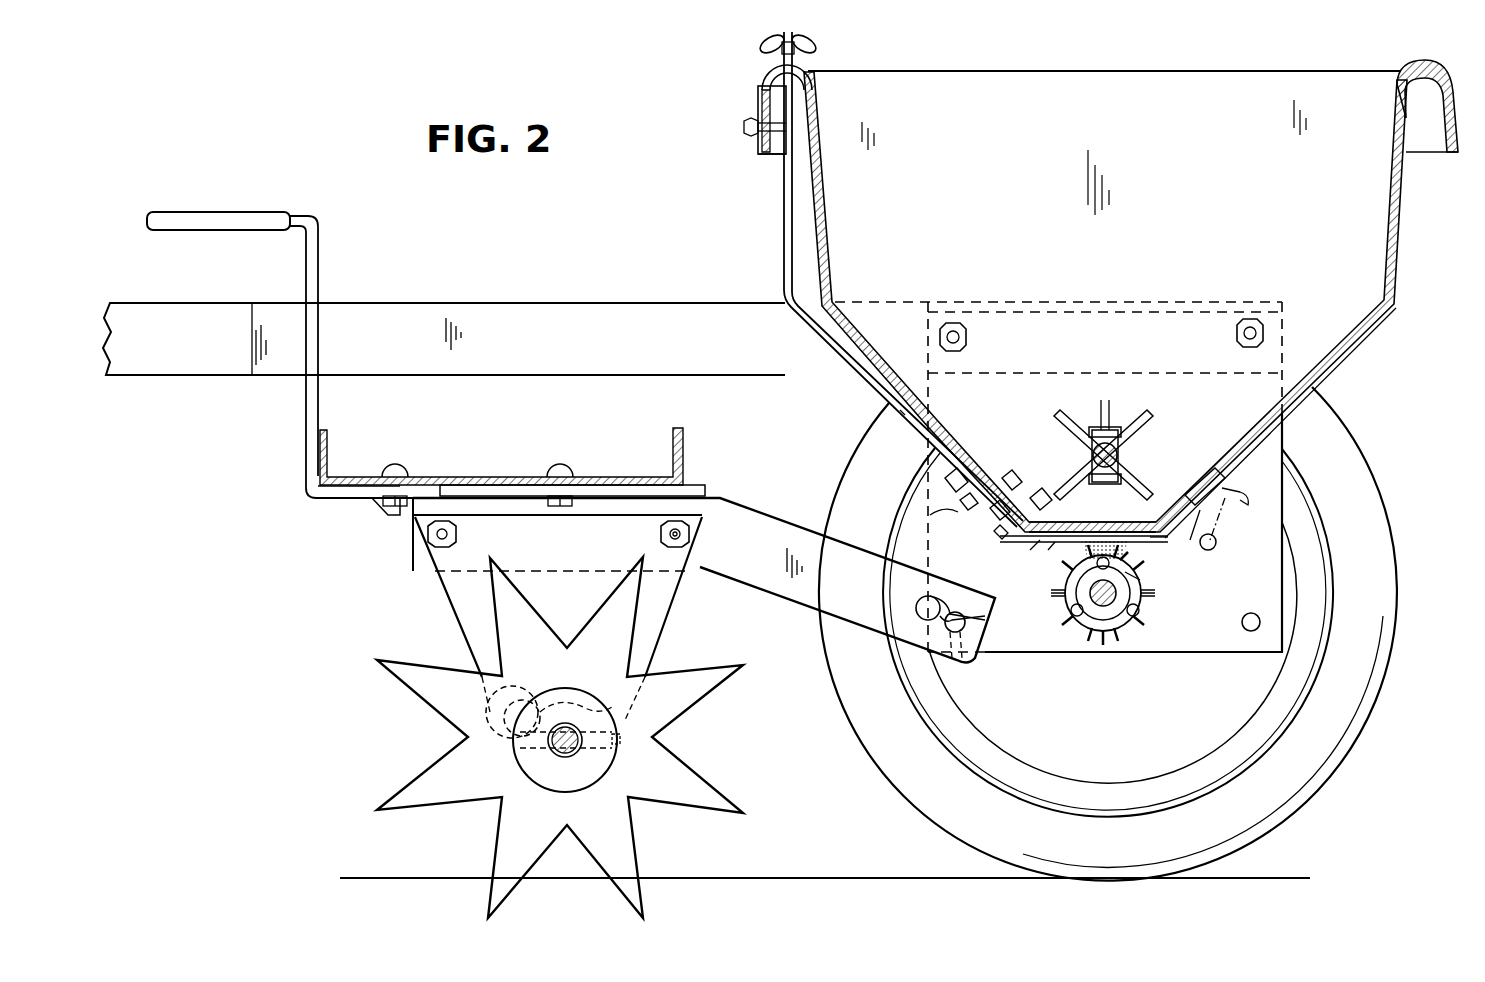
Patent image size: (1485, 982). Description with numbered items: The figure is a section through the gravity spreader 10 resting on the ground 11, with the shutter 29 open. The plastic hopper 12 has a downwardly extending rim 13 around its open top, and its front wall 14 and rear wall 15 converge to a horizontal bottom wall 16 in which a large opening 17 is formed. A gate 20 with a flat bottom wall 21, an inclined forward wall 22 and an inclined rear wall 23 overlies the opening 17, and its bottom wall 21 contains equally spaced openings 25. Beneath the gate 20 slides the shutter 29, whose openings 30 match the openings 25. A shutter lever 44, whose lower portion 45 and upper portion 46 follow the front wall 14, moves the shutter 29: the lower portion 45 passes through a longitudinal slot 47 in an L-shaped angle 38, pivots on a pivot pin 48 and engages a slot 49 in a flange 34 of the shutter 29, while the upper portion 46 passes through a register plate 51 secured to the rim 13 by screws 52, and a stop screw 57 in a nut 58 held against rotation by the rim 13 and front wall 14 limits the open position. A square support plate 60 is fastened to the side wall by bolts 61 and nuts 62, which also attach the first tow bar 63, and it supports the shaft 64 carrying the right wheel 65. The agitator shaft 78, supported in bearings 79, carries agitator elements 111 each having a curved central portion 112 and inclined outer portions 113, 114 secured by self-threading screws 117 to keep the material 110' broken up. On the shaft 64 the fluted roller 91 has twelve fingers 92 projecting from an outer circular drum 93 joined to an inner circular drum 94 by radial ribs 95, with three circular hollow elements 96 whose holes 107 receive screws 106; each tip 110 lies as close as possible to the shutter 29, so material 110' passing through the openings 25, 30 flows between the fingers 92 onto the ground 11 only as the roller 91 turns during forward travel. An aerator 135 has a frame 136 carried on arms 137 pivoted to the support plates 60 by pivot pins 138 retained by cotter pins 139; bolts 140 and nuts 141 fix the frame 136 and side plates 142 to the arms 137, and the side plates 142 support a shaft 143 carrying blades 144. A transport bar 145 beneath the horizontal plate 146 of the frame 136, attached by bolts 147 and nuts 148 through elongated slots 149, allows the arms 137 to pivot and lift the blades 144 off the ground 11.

The gravity spreader 10 is at (1087, 284).
The ground 11 is at (830, 878).
The hopper 12 is at (1442, 80).
The rim 13 is at (768, 158).
The front wall 14 is at (1084, 302).
The rear wall 15 is at (1340, 335).
The bottom wall 16 is at (1130, 541).
The opening 17 is at (1025, 490).
The gate 20 is at (1150, 519).
The bottom wall 21 is at (1060, 520).
The inclined forward wall 22 is at (1010, 472).
The inclined rear wall 23 is at (1180, 486).
The openings 25 is at (1090, 521).
The shutter 29 is at (1050, 544).
The openings 30 is at (1108, 524).
The flange 34 is at (1003, 543).
The L-shaped angle 38 is at (955, 519).
The shutter lever 44 is at (876, 413).
The lower portion 45 is at (862, 388).
The upper portion 46 is at (877, 279).
The longitudinal slot 47 is at (955, 485).
The pivot pin 48 is at (968, 512).
The slot 49 is at (1000, 524).
The register plate 51 is at (760, 102).
The screws 52 is at (743, 127).
The stop screw 57 is at (812, 58).
The nut 58 is at (808, 112).
The support plate 60 is at (928, 478).
The bolts 61 is at (1243, 333).
The nuts 62 is at (1243, 318).
The first tow bar 63 is at (545, 303).
The shaft 64 is at (1111, 620).
The right wheel 65 is at (848, 740).
The agitator shaft 78 is at (1120, 458).
The bearings 79 is at (1122, 438).
The fluted roller 91 is at (1115, 635).
The flutes or fingers 92 is at (1058, 615).
The outer circular drum 93 is at (1130, 635).
The inner circular drum 94 is at (1092, 632).
The radially extending ribs 95 is at (1108, 632).
The circular hollow elements 96 is at (1150, 605).
The screws 106 is at (1140, 615).
The holes 107 is at (1075, 620).
The tip 110 is at (1078, 593).
The material 110' is at (1159, 565).
The agitator elements 111 is at (1063, 408).
The longitudinal central portion 112 is at (1090, 438).
The inclined longitudinal outer portion 113 is at (1095, 412).
The inclined longitudinal outer portion 114 is at (1137, 420).
The self-threading screw 117 is at (1105, 427).
The aerator 135 is at (557, 737).
The frame 136 is at (694, 440).
The arms 137 is at (785, 600).
The pivot pin 138 is at (960, 660).
The cotter pin 139 is at (918, 603).
The bolts 140 is at (458, 534).
The nuts 141 is at (665, 538).
The side plates 142 is at (430, 590).
The shaft 143 is at (550, 748).
The blades 144 is at (705, 782).
The transport bar 145 is at (298, 414).
The plate 146 is at (638, 485).
The bolts 147 is at (400, 468).
The nuts 148 is at (375, 505).
The elongated slots 149 is at (385, 487).